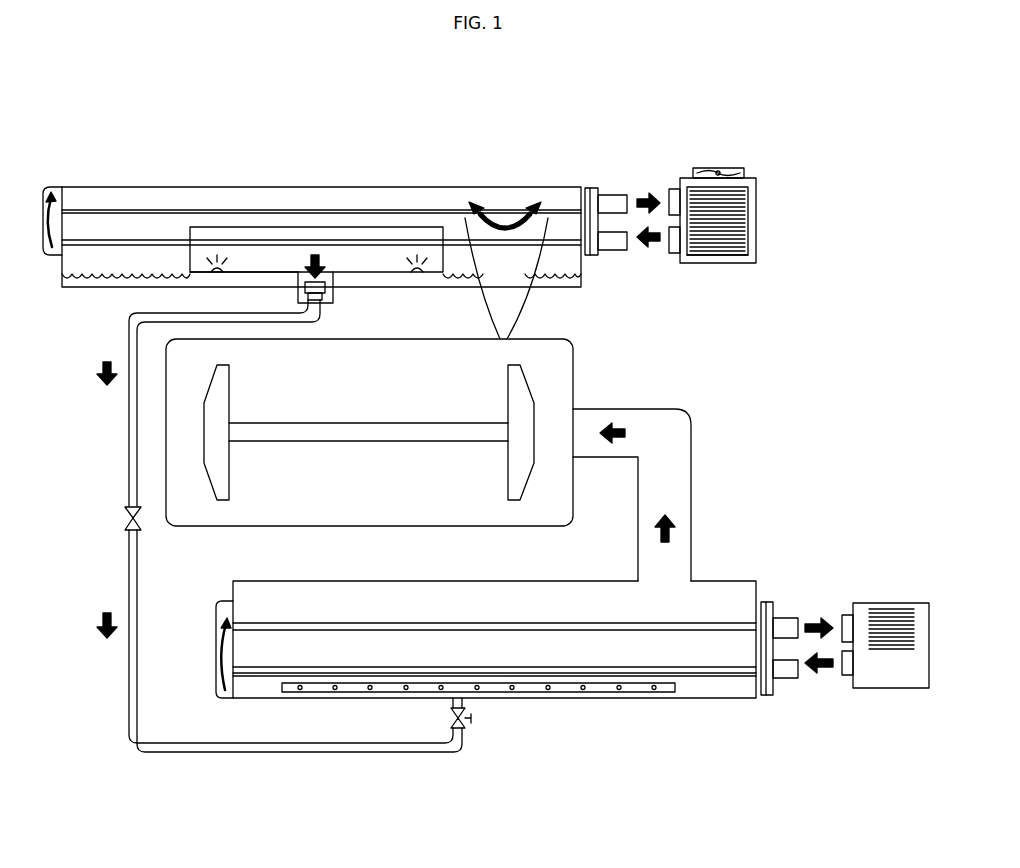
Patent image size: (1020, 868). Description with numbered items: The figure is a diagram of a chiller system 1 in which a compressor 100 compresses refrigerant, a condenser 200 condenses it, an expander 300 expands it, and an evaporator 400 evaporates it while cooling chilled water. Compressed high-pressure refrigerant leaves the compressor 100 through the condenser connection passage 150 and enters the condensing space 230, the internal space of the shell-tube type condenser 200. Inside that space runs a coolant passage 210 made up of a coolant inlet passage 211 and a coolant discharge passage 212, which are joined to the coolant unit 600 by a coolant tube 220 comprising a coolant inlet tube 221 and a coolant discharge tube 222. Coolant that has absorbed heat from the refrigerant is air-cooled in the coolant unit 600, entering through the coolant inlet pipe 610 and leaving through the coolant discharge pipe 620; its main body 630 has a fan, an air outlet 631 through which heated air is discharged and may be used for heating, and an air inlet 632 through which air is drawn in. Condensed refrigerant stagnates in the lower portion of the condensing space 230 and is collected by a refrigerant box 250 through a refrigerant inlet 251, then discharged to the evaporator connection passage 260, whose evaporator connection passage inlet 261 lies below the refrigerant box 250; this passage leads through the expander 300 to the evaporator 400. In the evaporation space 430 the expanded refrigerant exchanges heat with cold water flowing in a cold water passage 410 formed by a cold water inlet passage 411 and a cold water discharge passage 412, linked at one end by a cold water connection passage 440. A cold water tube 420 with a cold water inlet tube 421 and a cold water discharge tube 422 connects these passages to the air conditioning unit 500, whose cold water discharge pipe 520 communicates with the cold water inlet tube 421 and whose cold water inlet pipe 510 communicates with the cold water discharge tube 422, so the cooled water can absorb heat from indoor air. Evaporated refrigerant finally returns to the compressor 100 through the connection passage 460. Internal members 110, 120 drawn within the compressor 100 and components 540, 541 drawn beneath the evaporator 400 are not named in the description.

The chiller system 1 is at (636, 152).
The compressor 100 is at (582, 368).
The roller shaft 110 is at (520, 472).
The roller flange 120 is at (219, 457).
The condenser connection passage 150 is at (505, 305).
The condenser 200 is at (500, 180).
The coolant passage 210 is at (178, 117).
The coolant inlet passage 211 is at (106, 246).
The coolant discharge passage 212 is at (161, 212).
The coolant tube 220 is at (655, 314).
The coolant inlet tube 221 is at (613, 244).
The coolant discharge tube 222 is at (618, 205).
The condensing space 230 is at (548, 263).
The refrigerant box 250 is at (270, 228).
The refrigerant inlet 251 is at (417, 271).
The evaporator connection passage 260 is at (128, 422).
The evaporator connection passage inlet 261 is at (320, 288).
The expander 300 is at (120, 516).
The evaporator 400 is at (558, 704).
The cold water passage 410 is at (716, 822).
The cold water inlet passage 411 is at (719, 674).
The cold water discharge passage 412 is at (745, 628).
The cold water tube 420 is at (792, 776).
The cold water inlet tube 421 is at (787, 668).
The cold water discharge tube 422 is at (787, 628).
The evaporation space 430 is at (688, 690).
The cold water connection passage 440 is at (222, 684).
The connection passage 460 is at (691, 457).
The air conditioning unit 500 is at (893, 597).
The cold water inlet pipe 510 is at (848, 620).
The cold water discharge pipe 520 is at (848, 665).
The supply valve 540 is at (502, 692).
The perforated supply tray 541 is at (370, 692).
The coolant unit 600 is at (762, 232).
The coolant inlet pipe 610 is at (673, 200).
The coolant discharge pipe 620 is at (673, 242).
The main body 630 is at (752, 178).
The air outlet 631 is at (731, 172).
The air inlet 632 is at (740, 258).